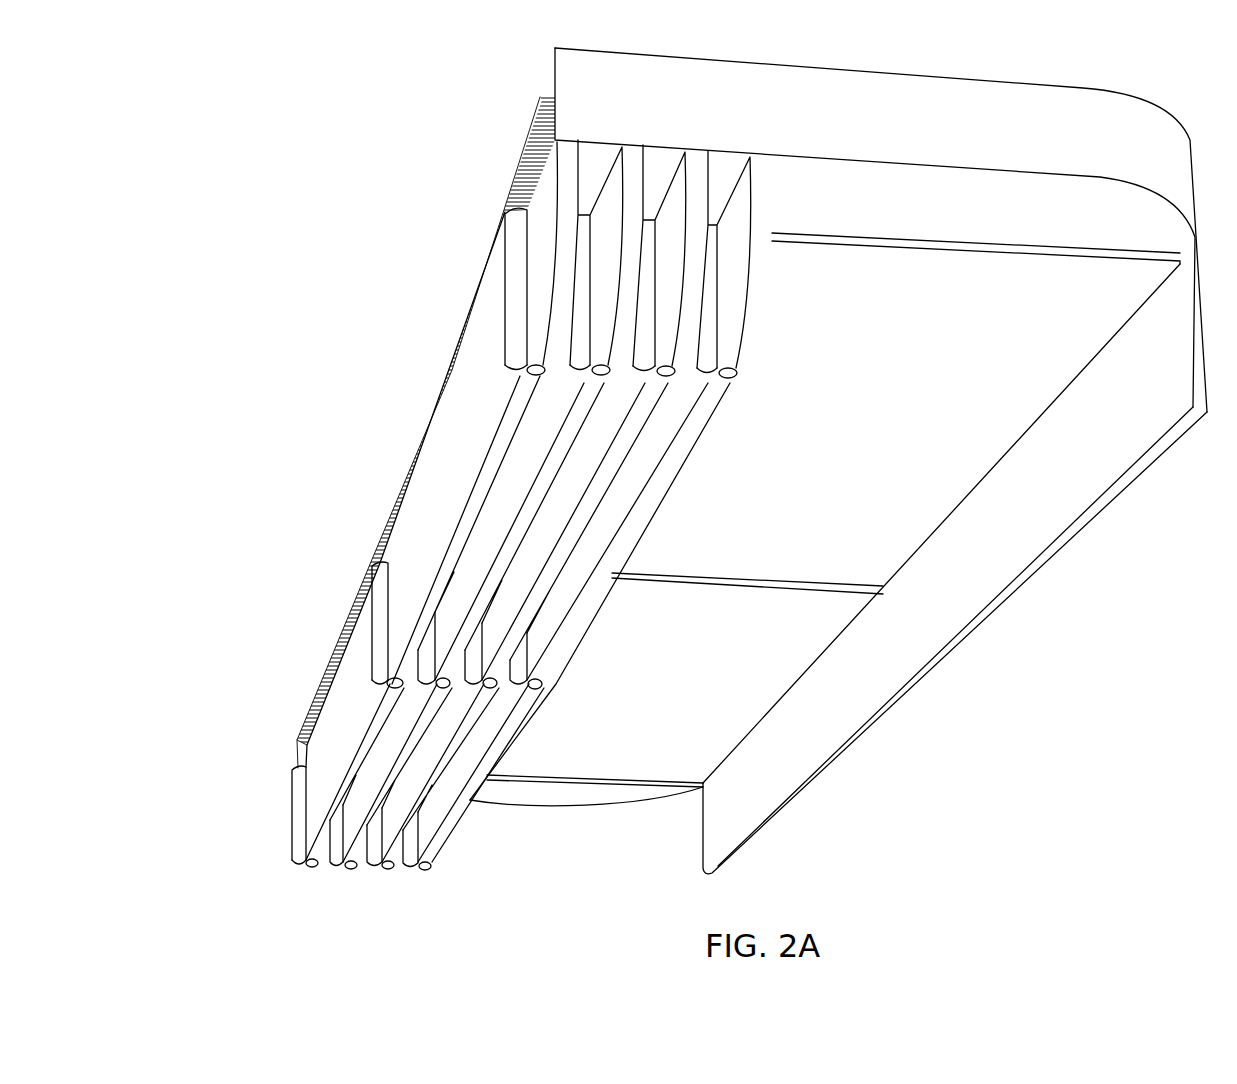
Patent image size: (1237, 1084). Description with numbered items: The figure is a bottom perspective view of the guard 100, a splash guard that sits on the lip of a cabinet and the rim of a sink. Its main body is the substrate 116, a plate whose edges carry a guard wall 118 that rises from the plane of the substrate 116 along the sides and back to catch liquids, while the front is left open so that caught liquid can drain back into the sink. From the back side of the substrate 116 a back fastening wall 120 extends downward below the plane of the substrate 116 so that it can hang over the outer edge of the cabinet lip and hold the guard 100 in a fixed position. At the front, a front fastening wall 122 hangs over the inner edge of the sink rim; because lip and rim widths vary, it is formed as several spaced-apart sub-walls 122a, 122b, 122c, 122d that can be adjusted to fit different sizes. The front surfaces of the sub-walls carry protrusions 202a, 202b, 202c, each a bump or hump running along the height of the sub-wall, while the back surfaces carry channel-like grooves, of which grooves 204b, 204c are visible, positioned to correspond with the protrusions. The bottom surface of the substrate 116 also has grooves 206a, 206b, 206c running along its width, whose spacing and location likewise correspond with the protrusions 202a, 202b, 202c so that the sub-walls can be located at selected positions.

The guard 100 is at (450, 138).
The substrate 116 is at (945, 465).
The guard wall 118 is at (1032, 120).
The back fastening wall 120 is at (975, 600).
The front fastening wall 122 is at (778, 146).
The sub-wall 122a is at (522, 390).
The sub-wall 122b is at (572, 427).
The sub-wall 122c is at (636, 428).
The sub-wall 122d is at (665, 472).
The protrusion 202a is at (300, 815).
The protrusion 202b is at (375, 605).
The protrusion 202c is at (513, 258).
The groove 204b is at (385, 687).
The groove 204c is at (525, 372).
The groove 206a is at (650, 778).
The groove 206b is at (757, 582).
The groove 206c is at (905, 240).